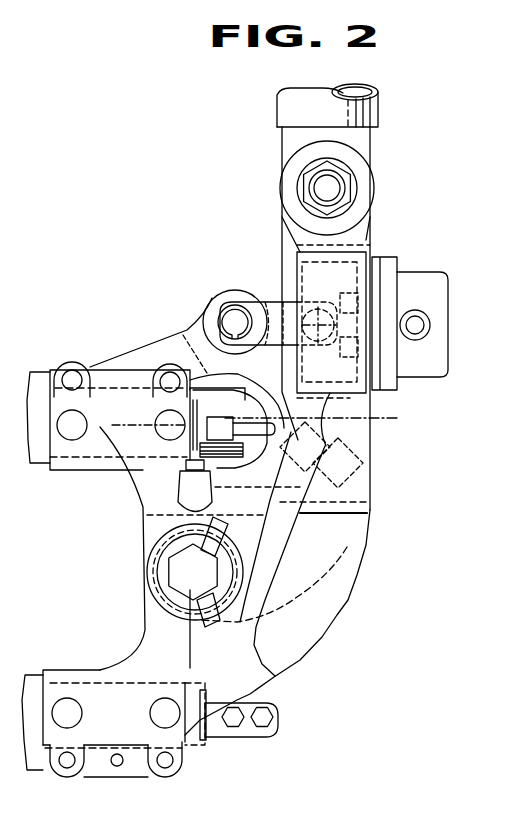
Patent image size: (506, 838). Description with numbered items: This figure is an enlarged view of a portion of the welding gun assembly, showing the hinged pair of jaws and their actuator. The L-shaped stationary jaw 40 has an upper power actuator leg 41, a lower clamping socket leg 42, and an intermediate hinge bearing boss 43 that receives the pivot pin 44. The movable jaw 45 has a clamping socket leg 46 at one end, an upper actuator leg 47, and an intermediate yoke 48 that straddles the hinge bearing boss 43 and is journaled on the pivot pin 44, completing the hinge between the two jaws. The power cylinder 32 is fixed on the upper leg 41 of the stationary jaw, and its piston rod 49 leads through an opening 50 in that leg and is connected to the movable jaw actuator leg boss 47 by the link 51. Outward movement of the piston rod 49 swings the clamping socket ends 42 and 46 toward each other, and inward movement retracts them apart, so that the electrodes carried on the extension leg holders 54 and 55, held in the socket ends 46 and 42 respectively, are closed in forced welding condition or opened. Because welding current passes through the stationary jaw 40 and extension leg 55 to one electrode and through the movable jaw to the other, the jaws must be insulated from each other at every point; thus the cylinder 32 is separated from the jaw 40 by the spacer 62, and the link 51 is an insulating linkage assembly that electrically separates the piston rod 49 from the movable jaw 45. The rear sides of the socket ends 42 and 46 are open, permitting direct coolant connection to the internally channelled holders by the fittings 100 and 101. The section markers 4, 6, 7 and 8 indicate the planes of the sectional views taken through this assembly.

The stationary jaw 40 is at (337, 628).
The upper power actuator leg 41 is at (373, 249).
The power cylinder 32 is at (439, 287).
The spacer 62 is at (379, 391).
The opening 50 is at (306, 272).
The link 51 is at (274, 306).
The upper actuator leg 47 is at (232, 292).
The piston rod 49 is at (335, 346).
The movable jaw 45 is at (133, 350).
The extension leg holder 54 is at (45, 369).
The clamping socket leg 46 is at (87, 462).
The fitting 100 is at (212, 380).
The yoke 48 is at (152, 530).
The hinge bearing boss 43 is at (149, 567).
The pivot pin 44 is at (165, 580).
The lower clamping socket leg 42 is at (70, 677).
The extension leg holder 55 is at (34, 763).
The fitting 101 is at (253, 731).
The section line 4- 4 is at (262, 422).
The section line 6- 6 is at (186, 323).
The section line 7- 7 is at (123, 398).
The section line 8- 8 is at (191, 428).